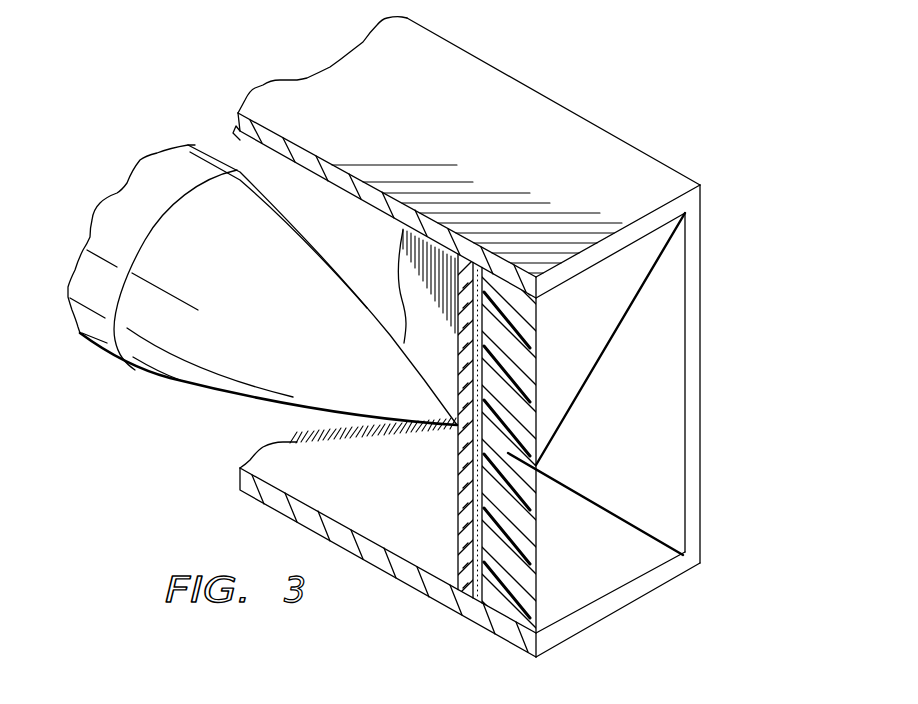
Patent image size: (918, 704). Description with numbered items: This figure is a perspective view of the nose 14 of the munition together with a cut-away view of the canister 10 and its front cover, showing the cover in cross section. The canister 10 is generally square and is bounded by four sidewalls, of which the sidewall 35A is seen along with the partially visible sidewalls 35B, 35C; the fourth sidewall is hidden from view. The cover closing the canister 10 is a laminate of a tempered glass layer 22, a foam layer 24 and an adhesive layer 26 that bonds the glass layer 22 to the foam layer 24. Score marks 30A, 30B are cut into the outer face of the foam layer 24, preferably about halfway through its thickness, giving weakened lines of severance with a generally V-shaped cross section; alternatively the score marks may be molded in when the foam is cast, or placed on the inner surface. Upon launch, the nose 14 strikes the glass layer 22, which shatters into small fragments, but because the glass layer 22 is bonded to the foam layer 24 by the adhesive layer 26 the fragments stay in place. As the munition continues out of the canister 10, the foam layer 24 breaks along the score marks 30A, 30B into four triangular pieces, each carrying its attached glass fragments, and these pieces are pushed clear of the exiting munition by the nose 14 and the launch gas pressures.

The canister 10 is at (411, 113).
The nose 14 is at (269, 335).
The glass layer 22 is at (465, 482).
The foam layer 24 is at (512, 592).
The adhesive layer 26 is at (480, 533).
The score mark 30A is at (618, 330).
The score mark 30B is at (608, 508).
The sidewall 35A is at (652, 212).
The sidewall 35B is at (700, 332).
The sidewall 35C is at (627, 607).